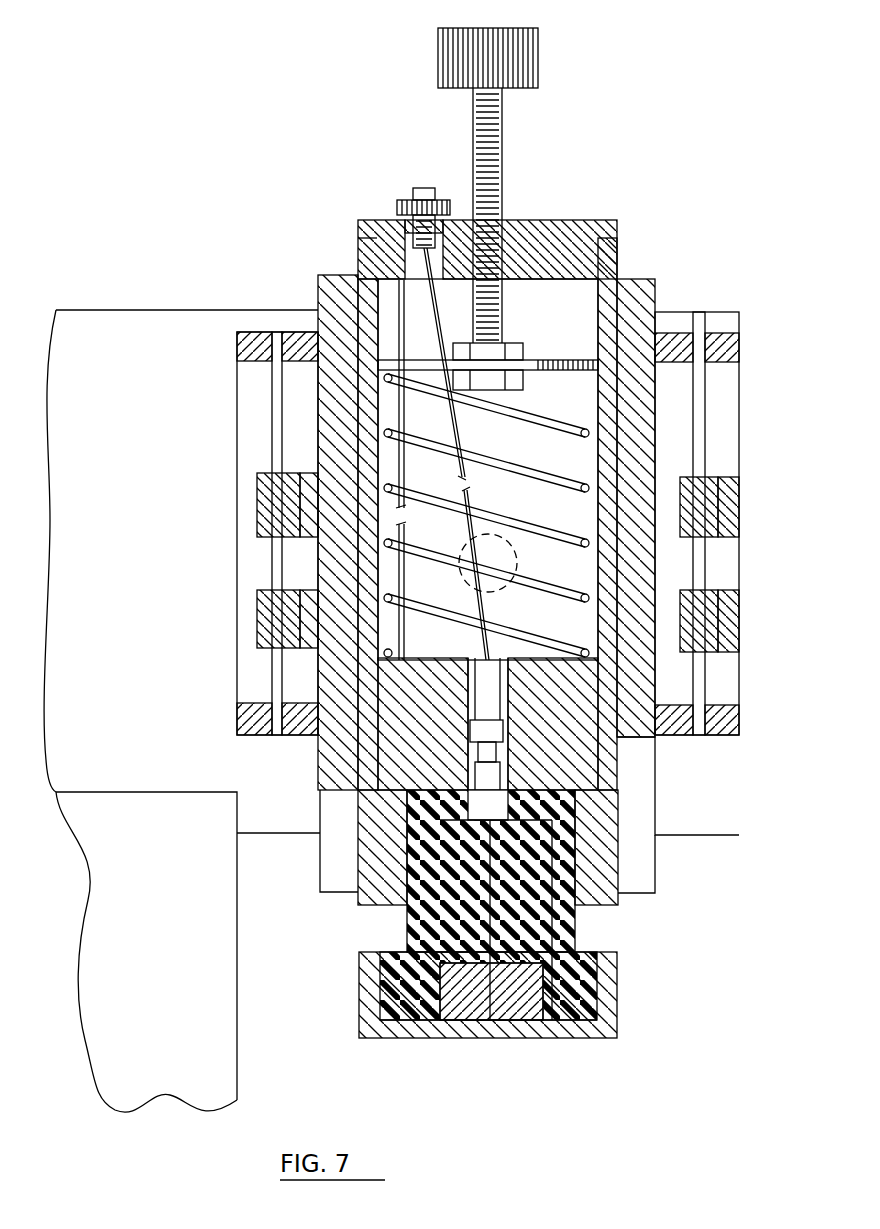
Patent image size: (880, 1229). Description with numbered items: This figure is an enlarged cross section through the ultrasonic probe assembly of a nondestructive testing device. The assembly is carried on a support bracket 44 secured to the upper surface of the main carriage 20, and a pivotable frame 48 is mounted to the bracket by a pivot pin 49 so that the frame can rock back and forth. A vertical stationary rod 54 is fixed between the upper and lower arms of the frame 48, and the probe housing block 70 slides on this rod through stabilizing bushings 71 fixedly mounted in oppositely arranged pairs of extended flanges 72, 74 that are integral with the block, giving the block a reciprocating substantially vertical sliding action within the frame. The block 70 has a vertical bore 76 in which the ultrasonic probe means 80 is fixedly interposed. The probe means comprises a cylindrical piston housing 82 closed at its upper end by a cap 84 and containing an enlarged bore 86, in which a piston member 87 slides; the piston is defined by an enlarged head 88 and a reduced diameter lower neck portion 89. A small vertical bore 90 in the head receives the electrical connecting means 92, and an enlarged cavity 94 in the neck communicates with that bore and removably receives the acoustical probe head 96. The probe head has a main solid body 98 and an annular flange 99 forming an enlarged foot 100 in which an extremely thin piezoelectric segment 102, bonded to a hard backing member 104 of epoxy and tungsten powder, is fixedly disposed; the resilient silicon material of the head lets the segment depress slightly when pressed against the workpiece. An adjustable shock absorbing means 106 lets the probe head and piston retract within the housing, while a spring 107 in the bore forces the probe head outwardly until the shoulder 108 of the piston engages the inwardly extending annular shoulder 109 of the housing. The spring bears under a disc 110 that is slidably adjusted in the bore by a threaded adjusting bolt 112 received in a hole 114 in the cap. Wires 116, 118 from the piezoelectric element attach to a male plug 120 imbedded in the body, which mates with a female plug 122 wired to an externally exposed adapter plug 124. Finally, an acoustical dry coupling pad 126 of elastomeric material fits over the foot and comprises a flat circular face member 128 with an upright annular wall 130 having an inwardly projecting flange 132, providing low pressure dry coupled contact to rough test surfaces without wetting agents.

The main carriage 20 is at (188, 952).
The support bracket 44 is at (181, 551).
The pivotable frame 48 is at (245, 405).
The pivot pin 49 is at (518, 566).
The stationary rod 54 is at (275, 556).
The probe housing block 70 is at (640, 295).
The stabilizing bushings 71 is at (262, 508).
The extended flange 72 is at (245, 490).
The extended flange 74 is at (728, 522).
The vertical bore 76 is at (358, 266).
The ultrasonic probe means 80 is at (628, 255).
The cylindrical piston housing 82 is at (610, 325).
The cap 84 is at (587, 232).
The enlarged bore 86 is at (598, 305).
The piston member 87 is at (385, 735).
The enlarged head 88 is at (375, 758).
The lower neck portion 89 is at (395, 835).
The small vertical bore 90 is at (520, 658).
The electrical connecting means 92 is at (470, 680).
The enlarged cavity 94 is at (575, 900).
The acoustical probe head 96 is at (350, 970).
The main body 98 is at (407, 920).
The annular flange 99 is at (617, 990).
The foot 100 is at (412, 1040).
The piezoelectric segment 102 is at (448, 1040).
The backing member 104 is at (498, 1040).
The adjustable shock absorbing means 106 is at (520, 298).
The spring 107 is at (517, 410).
The shoulder 108 is at (407, 795).
The annular shoulder 109 is at (620, 782).
The disc 110 is at (572, 360).
The threaded adjusting bolt 112 is at (503, 130).
The hole 114 is at (497, 228).
The wire 116 is at (432, 930).
The wire 118 is at (575, 945).
The male plug 120 is at (482, 775).
The female plug 122 is at (500, 722).
The adapter plug 124 is at (400, 202).
The acoustical dry coupling pad 126 is at (378, 1040).
The circular face member 128 is at (560, 1040).
The annular wall 130 is at (380, 990).
The inwardly projecting flange 132 is at (375, 952).